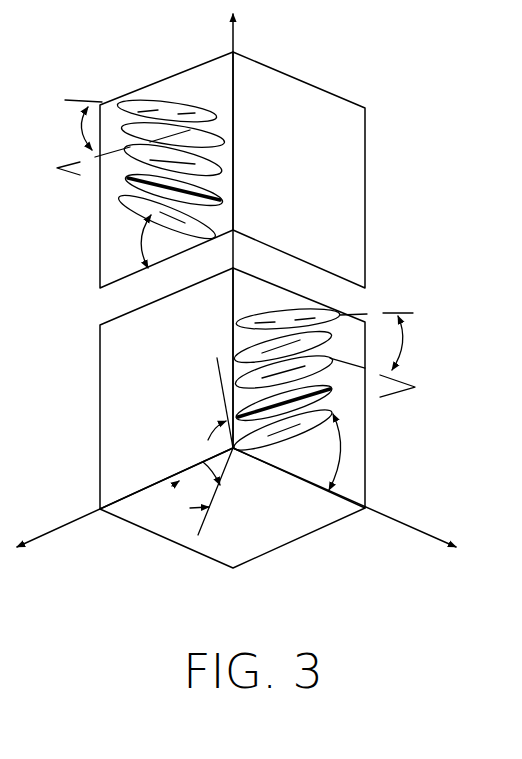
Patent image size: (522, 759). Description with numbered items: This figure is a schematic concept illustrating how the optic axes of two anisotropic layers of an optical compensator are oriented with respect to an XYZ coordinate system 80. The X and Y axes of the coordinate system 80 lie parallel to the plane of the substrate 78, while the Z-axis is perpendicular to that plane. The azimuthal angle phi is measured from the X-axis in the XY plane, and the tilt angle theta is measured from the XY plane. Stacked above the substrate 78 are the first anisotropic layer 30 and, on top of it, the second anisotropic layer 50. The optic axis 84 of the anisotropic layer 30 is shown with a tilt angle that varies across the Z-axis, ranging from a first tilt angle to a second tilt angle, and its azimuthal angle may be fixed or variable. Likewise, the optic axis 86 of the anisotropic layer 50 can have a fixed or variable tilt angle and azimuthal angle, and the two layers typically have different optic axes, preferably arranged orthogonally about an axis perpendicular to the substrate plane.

The first anisotropic layer 30 is at (201, 161).
The second anisotropic layer 50 is at (265, 401).
The substrate 78 is at (286, 540).
The XYZ coordinate system 80 is at (281, 28).
The optic axis 84 is at (126, 181).
The optic axis 86 is at (333, 389).